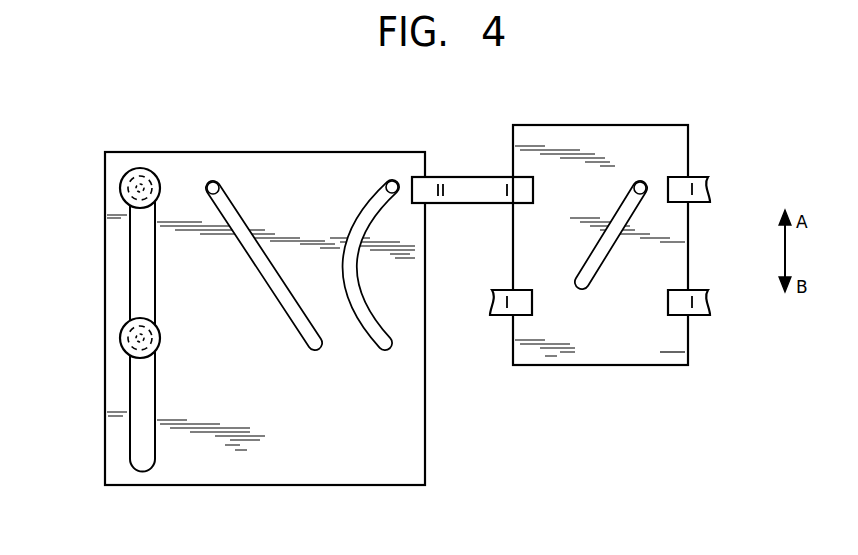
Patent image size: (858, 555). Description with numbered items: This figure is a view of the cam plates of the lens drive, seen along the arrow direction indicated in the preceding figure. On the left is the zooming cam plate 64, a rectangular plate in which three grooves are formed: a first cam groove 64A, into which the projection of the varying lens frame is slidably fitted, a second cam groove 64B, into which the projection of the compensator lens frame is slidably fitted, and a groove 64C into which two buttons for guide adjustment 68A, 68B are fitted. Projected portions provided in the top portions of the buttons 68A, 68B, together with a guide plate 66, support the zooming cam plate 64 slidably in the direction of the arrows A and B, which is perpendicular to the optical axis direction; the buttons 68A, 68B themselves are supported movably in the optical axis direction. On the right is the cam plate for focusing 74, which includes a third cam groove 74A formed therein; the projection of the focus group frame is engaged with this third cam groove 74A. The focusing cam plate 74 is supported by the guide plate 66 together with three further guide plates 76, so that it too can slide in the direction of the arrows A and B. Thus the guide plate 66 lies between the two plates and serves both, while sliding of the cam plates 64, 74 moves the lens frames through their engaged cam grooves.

The zooming cam plate 64 is at (270, 168).
The first cam groove 64A is at (305, 349).
The second cam groove 64B is at (380, 349).
The groove 64C is at (137, 262).
The guide plate 66 is at (432, 182).
The button for guide adjustment 68A is at (122, 191).
The button for guide adjustment 68B is at (122, 341).
The cam plate for focusing 74 is at (594, 141).
The third cam groove 74A is at (590, 284).
The guide plate 76 is at (690, 178).